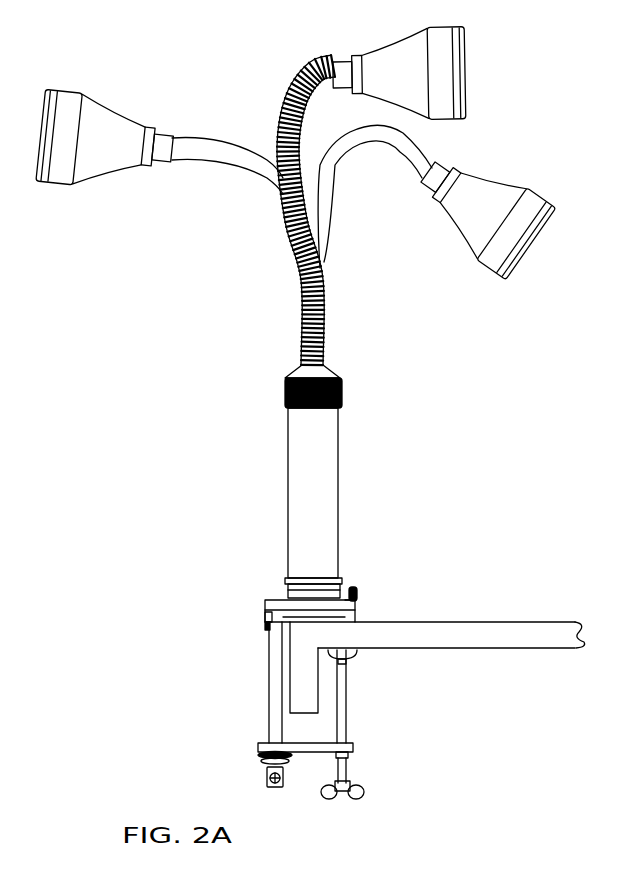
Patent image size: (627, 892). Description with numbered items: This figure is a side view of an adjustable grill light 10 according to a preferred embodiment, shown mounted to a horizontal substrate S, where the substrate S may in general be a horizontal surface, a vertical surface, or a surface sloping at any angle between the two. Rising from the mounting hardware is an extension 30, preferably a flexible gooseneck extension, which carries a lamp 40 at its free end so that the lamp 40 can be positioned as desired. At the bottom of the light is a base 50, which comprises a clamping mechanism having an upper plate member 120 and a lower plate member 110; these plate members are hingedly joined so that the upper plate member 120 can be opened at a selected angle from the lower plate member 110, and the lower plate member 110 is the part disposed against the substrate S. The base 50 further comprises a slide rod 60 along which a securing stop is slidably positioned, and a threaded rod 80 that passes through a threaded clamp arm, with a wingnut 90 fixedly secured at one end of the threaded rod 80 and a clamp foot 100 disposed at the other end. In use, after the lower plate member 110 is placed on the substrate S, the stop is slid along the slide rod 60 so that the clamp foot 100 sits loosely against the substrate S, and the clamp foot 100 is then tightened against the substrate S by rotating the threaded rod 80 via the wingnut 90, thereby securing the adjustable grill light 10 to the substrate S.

The adjustable grill light 10 is at (132, 352).
The extension 30 is at (323, 326).
The lamp 40 is at (440, 63).
The base 50 is at (265, 612).
The slide rod 60 is at (268, 705).
The threaded rod 80 is at (347, 713).
The wingnut 90 is at (363, 790).
The clamp foot 100 is at (350, 657).
The lower plate member 110 is at (355, 603).
The upper plate member 120 is at (267, 598).
The substrate S is at (530, 633).